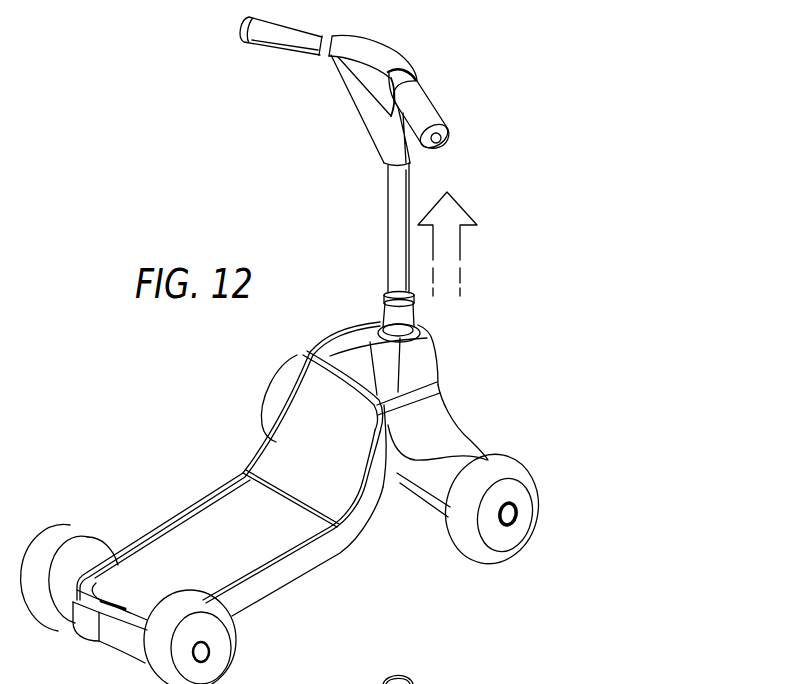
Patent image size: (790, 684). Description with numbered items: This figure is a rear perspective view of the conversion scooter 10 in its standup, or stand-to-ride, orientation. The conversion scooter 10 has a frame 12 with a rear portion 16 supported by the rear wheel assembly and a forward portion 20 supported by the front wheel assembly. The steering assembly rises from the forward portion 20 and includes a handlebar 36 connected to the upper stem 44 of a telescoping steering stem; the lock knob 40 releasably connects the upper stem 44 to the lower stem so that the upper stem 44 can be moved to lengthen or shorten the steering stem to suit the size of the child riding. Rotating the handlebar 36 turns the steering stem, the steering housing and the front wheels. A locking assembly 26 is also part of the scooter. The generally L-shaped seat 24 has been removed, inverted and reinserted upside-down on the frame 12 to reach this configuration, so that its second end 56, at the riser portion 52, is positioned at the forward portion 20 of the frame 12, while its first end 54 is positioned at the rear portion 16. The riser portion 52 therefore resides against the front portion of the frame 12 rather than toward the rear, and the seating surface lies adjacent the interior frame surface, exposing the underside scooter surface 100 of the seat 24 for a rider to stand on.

The conversion scooter 10 is at (602, 175).
The frame 12 is at (290, 578).
The rear portion 16 is at (117, 640).
The forward portion 20 is at (440, 380).
The seat 24 is at (227, 510).
The locking assembly 26 is at (90, 598).
The handlebar 36 is at (387, 130).
The lock knob 40 is at (407, 310).
The upper stem 44 is at (410, 182).
The riser portion 52 is at (303, 420).
The first end 54 is at (122, 593).
The second end 56 is at (330, 373).
The scooter surface 100 is at (167, 540).